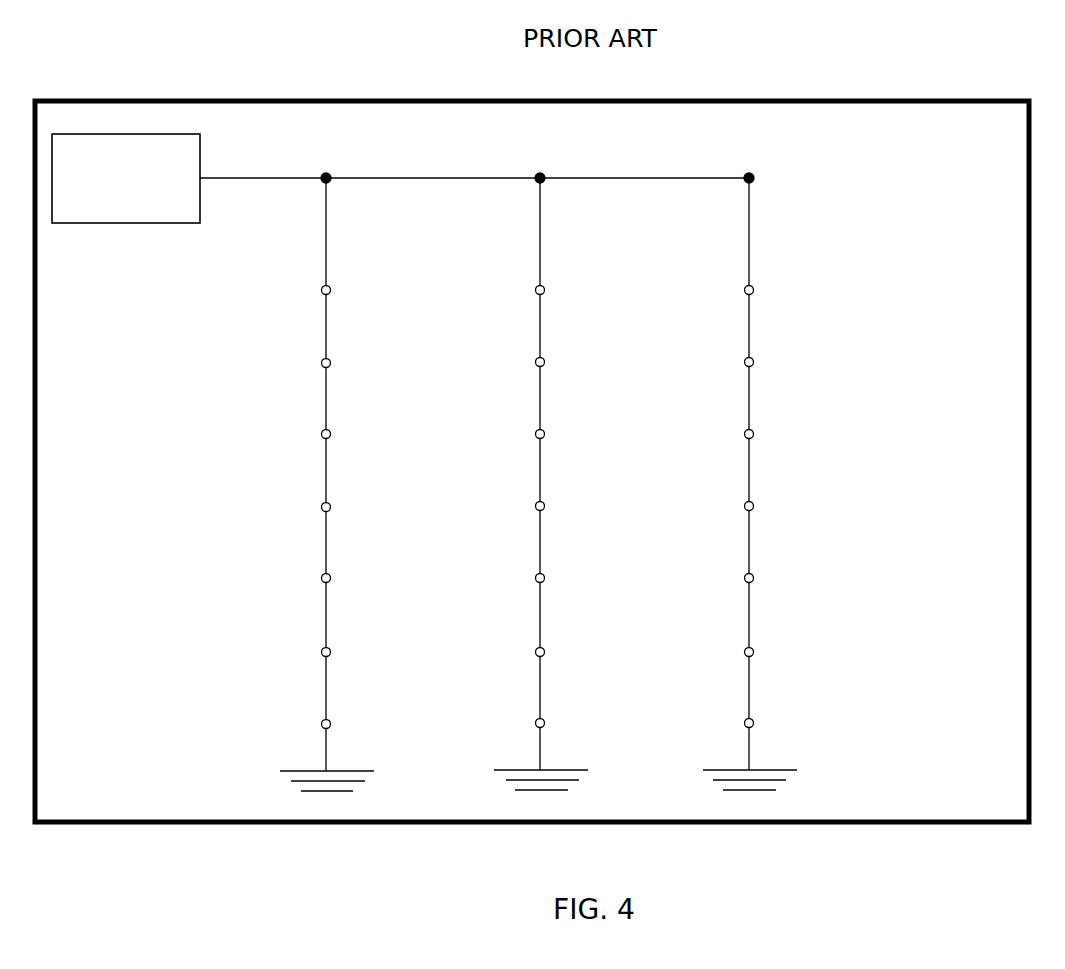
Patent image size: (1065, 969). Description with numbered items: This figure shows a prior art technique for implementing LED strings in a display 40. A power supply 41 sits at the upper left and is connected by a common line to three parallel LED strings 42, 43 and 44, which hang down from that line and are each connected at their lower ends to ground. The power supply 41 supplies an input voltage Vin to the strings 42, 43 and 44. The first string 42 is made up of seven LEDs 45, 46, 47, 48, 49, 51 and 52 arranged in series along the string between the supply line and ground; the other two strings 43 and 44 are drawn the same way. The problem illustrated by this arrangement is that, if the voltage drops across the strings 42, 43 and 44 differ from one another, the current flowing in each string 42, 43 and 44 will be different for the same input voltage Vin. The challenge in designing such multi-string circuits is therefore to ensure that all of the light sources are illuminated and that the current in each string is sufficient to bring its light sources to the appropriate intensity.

The display 40 is at (963, 166).
The power supply 41 is at (191, 174).
The string 42 is at (327, 232).
The string 43 is at (541, 229).
The string 44 is at (750, 229).
The LED 45 is at (337, 280).
The LED 46 is at (336, 353).
The LED 47 is at (336, 424).
The LED 48 is at (336, 496).
The LED 49 is at (336, 568).
The LED 51 is at (336, 642).
The LED 52 is at (336, 714).